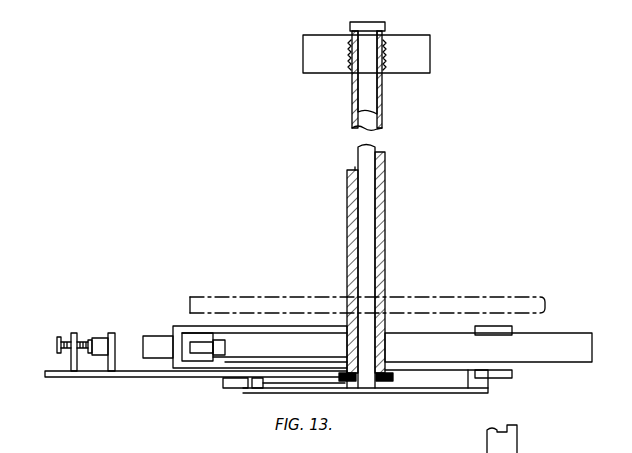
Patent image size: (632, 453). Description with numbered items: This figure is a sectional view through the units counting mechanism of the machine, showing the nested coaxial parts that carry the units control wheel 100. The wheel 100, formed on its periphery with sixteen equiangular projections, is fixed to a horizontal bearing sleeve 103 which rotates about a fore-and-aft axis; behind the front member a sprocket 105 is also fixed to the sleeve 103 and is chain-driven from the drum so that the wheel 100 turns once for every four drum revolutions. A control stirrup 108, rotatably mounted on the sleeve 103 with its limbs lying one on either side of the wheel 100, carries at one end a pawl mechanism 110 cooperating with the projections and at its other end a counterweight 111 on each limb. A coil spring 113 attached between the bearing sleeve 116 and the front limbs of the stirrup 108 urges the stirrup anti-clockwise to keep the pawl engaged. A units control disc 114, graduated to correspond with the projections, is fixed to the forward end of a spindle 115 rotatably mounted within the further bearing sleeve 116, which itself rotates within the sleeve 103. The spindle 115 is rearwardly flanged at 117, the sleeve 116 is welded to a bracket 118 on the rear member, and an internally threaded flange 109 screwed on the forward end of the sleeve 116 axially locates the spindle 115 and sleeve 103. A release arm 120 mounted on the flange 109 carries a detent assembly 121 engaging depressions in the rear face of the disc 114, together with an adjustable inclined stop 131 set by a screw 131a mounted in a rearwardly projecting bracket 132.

The units control wheel 100 is at (580, 355).
The horizontal bearing sleeve 103 is at (388, 245).
The sprocket 105 is at (292, 298).
The control stirrup 108 is at (216, 358).
The internally threaded flange 109 is at (386, 381).
The pawl mechanism 110 is at (206, 352).
The counterweight 111 is at (490, 330).
The coil spring 113 is at (442, 382).
The units control disc 114 is at (292, 390).
The spindle 115 is at (376, 286).
The bearing sleeve 116 is at (386, 207).
The flange 117 is at (352, 26).
The bracket 118 is at (430, 46).
The release arm 120 is at (115, 378).
The detent assembly 121 is at (262, 386).
The adjustable inclined stop 131 is at (112, 336).
The screw 131a is at (57, 342).
The bracket 132 is at (76, 336).